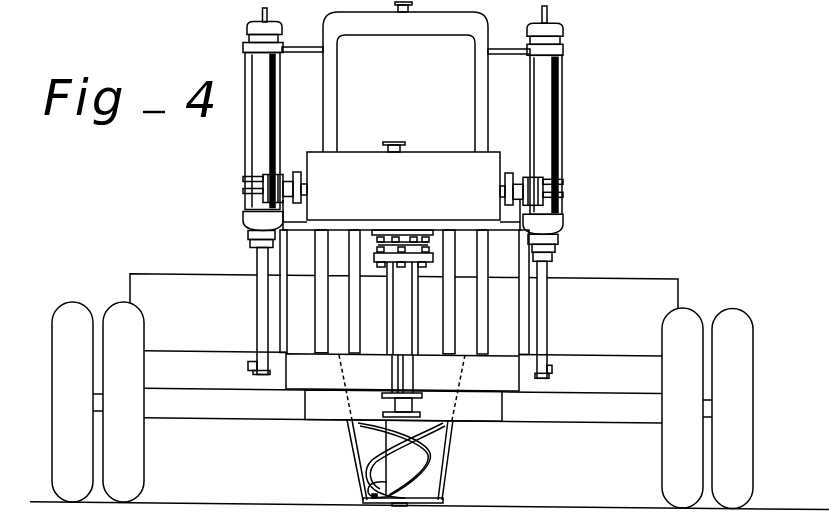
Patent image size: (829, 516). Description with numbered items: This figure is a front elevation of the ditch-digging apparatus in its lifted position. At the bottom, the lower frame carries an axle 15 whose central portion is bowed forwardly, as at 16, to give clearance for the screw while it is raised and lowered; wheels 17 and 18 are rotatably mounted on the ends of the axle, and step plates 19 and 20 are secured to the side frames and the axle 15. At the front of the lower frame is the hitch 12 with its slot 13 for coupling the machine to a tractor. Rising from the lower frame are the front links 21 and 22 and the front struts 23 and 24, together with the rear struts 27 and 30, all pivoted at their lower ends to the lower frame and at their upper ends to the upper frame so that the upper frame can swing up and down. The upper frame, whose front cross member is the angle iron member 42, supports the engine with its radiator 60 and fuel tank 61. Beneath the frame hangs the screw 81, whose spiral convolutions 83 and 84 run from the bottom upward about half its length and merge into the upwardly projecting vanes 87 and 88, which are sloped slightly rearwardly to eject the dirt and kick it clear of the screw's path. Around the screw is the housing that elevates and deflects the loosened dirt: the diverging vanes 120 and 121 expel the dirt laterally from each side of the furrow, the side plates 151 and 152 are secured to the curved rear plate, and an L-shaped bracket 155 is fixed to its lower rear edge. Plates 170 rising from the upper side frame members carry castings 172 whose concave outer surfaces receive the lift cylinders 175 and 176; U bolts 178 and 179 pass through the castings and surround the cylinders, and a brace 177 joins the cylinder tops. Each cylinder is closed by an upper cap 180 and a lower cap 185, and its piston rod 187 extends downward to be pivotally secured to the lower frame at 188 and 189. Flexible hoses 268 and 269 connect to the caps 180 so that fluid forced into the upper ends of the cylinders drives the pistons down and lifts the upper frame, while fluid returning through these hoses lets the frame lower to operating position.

The hitch 12 is at (424, 398).
The slot 13 is at (395, 405).
The axle 15 is at (563, 422).
The bowed central portion of axle 16 is at (403, 406).
The wheel 17 is at (402, 405).
The wheel 18 is at (402, 405).
The step plate 19 is at (183, 387).
The step plate 20 is at (615, 393).
The link 21 is at (484, 337).
The link 22 is at (447, 302).
The strut 23 is at (358, 302).
The strut 24 is at (322, 343).
The rear strut 27 is at (526, 298).
The rear strut 30 is at (284, 298).
The angle iron member 42 is at (503, 227).
The radiator 60 is at (405, 77).
The fuel tank 61 is at (403, 181).
The screw 81 is at (394, 459).
The spiral convolution 83 is at (433, 468).
The spiral convolution 84 is at (375, 477).
The vane 87 is at (381, 327).
The vane 88 is at (424, 327).
The vane 120 is at (258, 313).
The vane 121 is at (548, 316).
The side plate 151 is at (352, 440).
The side plate 152 is at (455, 438).
The L-shaped bracket 155 is at (443, 507).
The plate 170 is at (306, 173).
The casting 172 is at (282, 173).
The cylinder 175 is at (248, 125).
The cylinder 176 is at (552, 117).
The brace 177 is at (293, 52).
The U bolt 178 is at (245, 178).
The U bolt 179 is at (245, 190).
The cap 180 is at (246, 37).
The cap 185 is at (246, 217).
The rod 187 is at (257, 319).
The pivotal connection 188 is at (552, 370).
The pivotal connection 189 is at (248, 365).
The flexible hose 268 is at (268, 20).
The flexible hose 269 is at (540, 15).